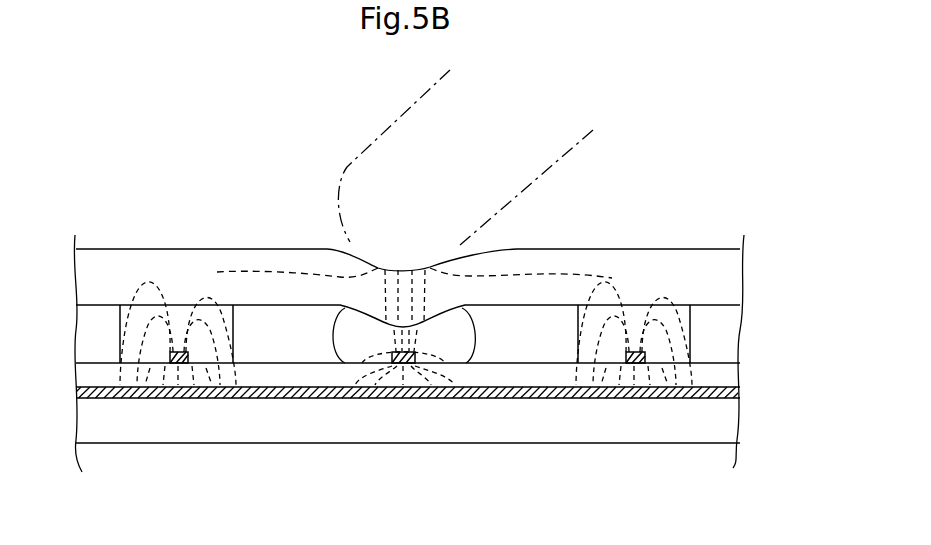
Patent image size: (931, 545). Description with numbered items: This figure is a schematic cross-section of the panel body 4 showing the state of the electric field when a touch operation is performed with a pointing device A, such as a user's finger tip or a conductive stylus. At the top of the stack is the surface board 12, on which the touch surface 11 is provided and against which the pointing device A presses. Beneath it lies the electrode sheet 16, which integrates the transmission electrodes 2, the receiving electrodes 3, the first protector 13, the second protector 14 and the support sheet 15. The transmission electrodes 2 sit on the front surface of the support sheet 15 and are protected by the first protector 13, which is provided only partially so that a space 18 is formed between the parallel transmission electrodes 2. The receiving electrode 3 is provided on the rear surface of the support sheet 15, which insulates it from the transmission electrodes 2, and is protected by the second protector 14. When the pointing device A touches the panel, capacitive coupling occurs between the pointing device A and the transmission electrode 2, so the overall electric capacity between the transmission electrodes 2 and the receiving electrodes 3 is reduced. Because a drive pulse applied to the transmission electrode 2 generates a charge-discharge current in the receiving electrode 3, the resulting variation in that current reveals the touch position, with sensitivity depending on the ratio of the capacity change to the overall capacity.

The transmission electrode 2 is at (175, 352).
The receiving electrode 3 is at (628, 400).
The panel body 4 is at (688, 122).
The touch surface 11 is at (517, 249).
The surface board 12 is at (273, 249).
The first protector 13 is at (203, 303).
The second protector 14 is at (678, 444).
The support sheet 15 is at (542, 387).
The electrode sheet 16 is at (768, 302).
The space 18 is at (305, 348).
The pointing device A is at (368, 142).